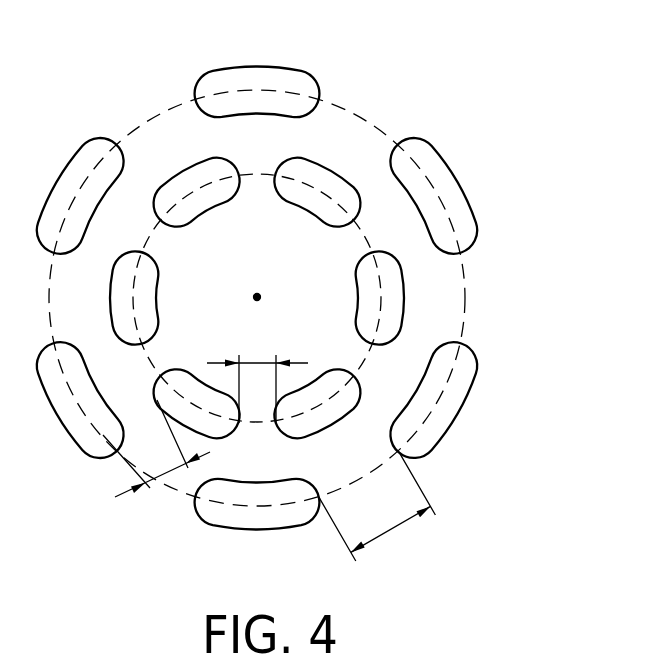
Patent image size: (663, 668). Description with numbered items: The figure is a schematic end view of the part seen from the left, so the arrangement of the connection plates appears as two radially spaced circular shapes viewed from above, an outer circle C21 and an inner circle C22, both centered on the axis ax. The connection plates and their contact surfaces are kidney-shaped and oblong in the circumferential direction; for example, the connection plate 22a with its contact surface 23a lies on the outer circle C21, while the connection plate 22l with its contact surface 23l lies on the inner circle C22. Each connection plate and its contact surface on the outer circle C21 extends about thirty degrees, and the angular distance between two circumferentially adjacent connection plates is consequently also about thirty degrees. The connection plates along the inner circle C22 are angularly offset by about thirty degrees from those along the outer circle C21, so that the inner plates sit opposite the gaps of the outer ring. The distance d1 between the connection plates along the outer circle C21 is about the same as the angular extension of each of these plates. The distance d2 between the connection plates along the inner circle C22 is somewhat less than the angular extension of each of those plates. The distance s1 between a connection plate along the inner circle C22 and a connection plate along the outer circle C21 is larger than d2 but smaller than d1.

The connection plate 22a is at (259, 71).
The contact surface 23a is at (238, 85).
The connection plate 22l is at (157, 125).
The contact surface 23l is at (200, 177).
The central axis ax is at (257, 296).
The outer circle C21 is at (468, 292).
The inner circle C22 is at (380, 318).
The distance between connection plates along the outer circle d1 is at (377, 506).
The distance between connection plates along the inner circle d2 is at (257, 377).
The distance between inner-circle and outer-circle connection plates s1 is at (165, 474).